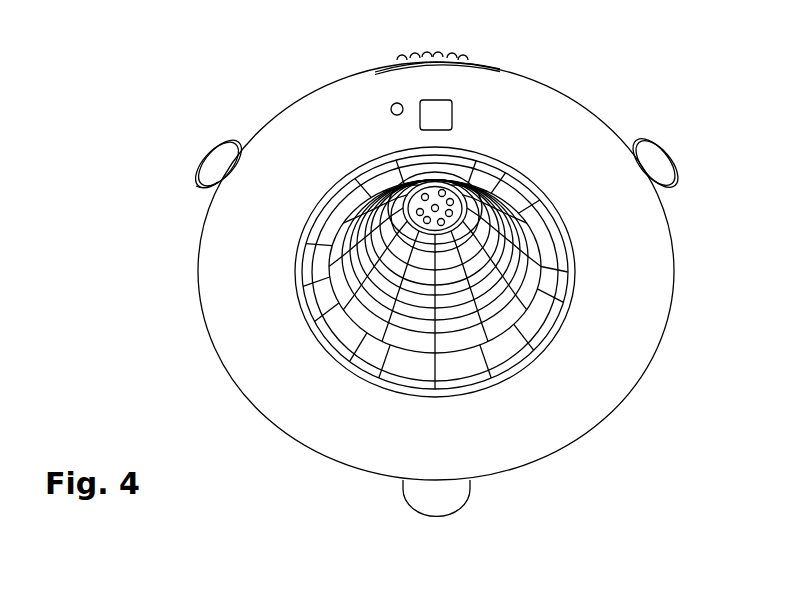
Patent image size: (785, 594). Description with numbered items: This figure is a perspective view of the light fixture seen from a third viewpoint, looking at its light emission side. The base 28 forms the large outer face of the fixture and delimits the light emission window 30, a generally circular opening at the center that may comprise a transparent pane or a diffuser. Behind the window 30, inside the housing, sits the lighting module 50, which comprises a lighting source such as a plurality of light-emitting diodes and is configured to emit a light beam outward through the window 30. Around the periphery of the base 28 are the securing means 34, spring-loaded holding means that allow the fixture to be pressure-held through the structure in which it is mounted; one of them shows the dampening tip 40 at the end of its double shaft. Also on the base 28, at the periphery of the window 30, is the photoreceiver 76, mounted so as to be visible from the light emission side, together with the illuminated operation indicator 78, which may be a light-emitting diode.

The base 28 is at (648, 246).
The light emission window 30 is at (545, 312).
The securing means 34 is at (184, 151).
The dampening tip 40 is at (200, 183).
The lighting module 50 is at (430, 236).
The photoreceiver 76 is at (443, 113).
The illuminated operation indicator 78 is at (392, 104).